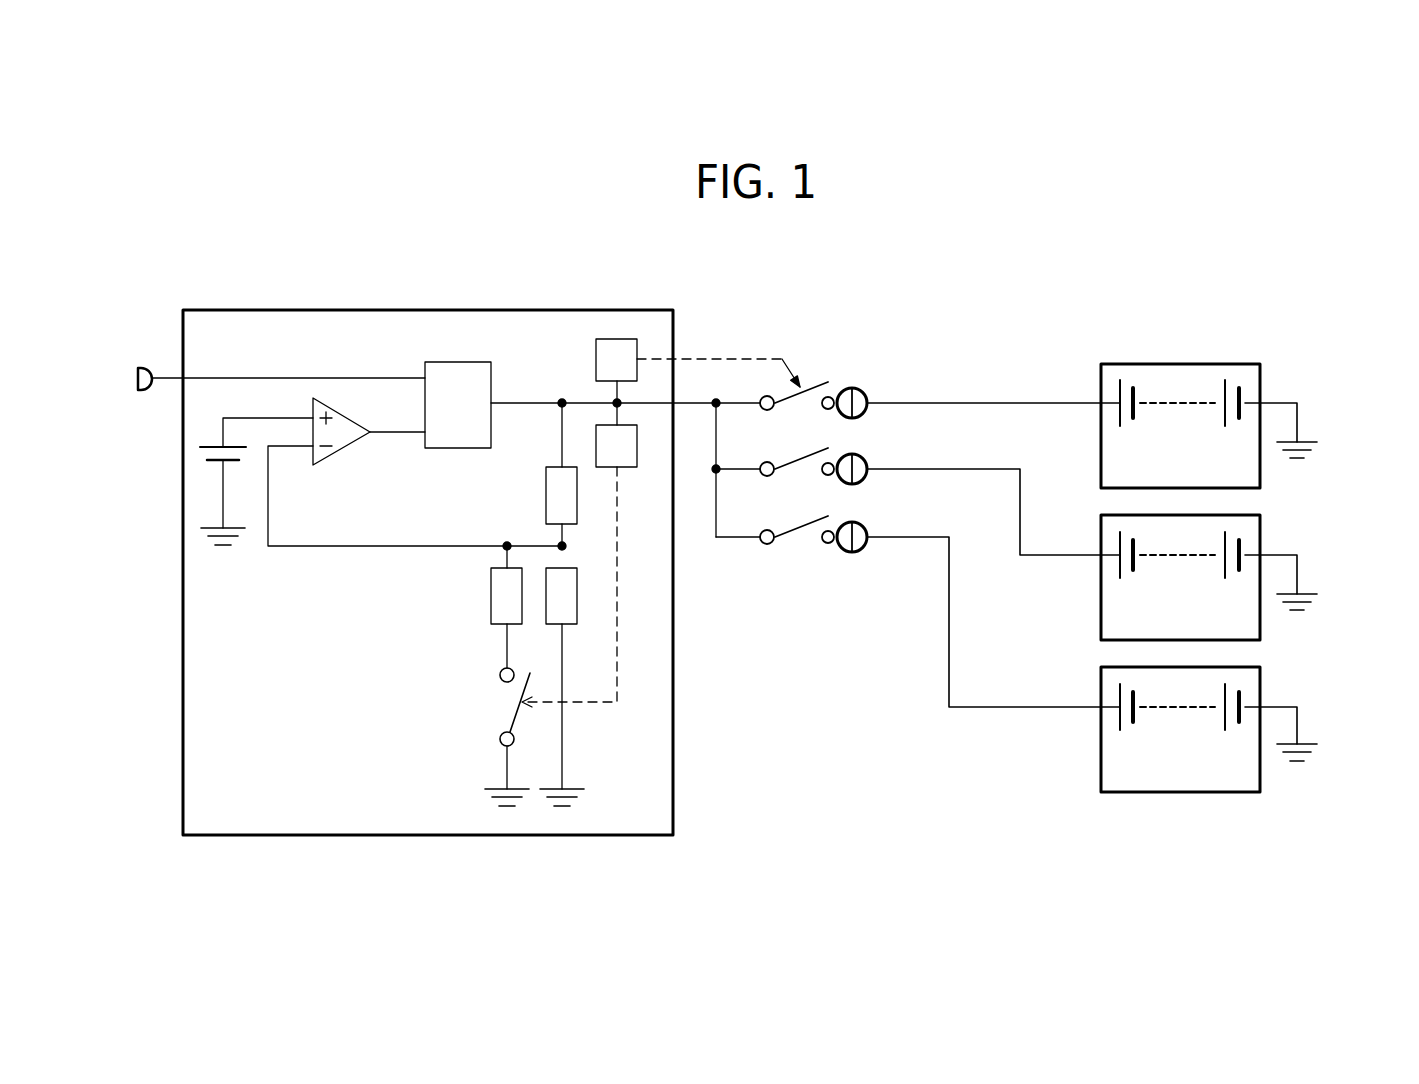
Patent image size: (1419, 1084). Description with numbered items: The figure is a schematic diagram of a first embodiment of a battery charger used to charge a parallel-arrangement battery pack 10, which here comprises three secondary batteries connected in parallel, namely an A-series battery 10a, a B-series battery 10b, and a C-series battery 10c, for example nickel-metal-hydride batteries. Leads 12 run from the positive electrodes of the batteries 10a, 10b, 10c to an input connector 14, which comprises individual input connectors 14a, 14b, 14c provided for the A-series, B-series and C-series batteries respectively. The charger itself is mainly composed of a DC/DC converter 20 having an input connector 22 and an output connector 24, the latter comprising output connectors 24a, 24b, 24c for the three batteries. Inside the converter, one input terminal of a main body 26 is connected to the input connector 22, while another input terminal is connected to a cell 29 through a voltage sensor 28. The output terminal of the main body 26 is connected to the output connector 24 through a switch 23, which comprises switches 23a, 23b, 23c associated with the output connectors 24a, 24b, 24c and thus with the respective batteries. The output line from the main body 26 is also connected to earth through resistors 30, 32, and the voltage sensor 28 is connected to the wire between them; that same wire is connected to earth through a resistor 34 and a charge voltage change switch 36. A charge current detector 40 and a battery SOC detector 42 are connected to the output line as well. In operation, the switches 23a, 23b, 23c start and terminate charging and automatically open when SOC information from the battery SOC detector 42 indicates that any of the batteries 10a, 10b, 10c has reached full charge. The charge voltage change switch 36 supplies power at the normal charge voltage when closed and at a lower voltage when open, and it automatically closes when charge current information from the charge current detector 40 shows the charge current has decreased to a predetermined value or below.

The parallel-arrangement battery pack 10 is at (1246, 578).
The A-series battery 10a is at (1223, 716).
The B-series battery 10b is at (1262, 532).
The C-series battery 10c is at (1262, 474).
The leads 12 is at (1080, 402).
The input connector 14 is at (934, 434).
The input connector 14a is at (864, 528).
The input connector 14b is at (866, 460).
The input connector 14c is at (868, 399).
The DC/DC converter 20 is at (594, 309).
The input connector 22 is at (143, 367).
The switch 23 is at (779, 532).
The switch 23a is at (802, 512).
The switch 23b is at (779, 545).
The switch 23c is at (744, 579).
The output connector 24 is at (822, 433).
The output connector 24a is at (733, 590).
The output connector 24b is at (777, 590).
The output connector 24c is at (818, 590).
The DC/DC converter main body 26 is at (443, 442).
The voltage sensor 28 is at (345, 440).
The cell 29 is at (215, 445).
The resistor 30 is at (546, 482).
The resistor 32 is at (571, 620).
The resistor 34 is at (492, 584).
The charge voltage change switch 36 is at (513, 707).
The charge current detector 40 is at (625, 462).
The battery SOC detector 42 is at (598, 355).